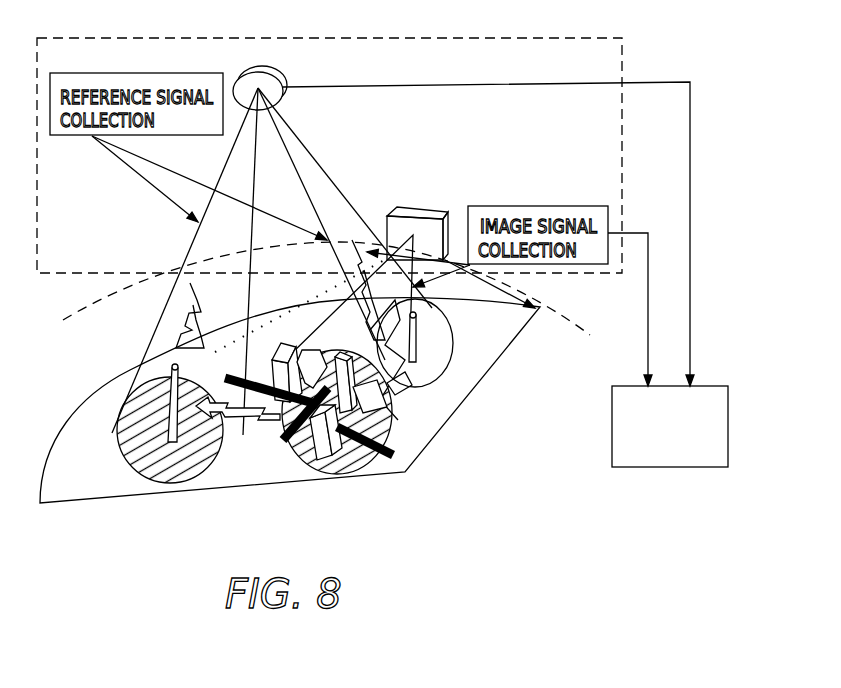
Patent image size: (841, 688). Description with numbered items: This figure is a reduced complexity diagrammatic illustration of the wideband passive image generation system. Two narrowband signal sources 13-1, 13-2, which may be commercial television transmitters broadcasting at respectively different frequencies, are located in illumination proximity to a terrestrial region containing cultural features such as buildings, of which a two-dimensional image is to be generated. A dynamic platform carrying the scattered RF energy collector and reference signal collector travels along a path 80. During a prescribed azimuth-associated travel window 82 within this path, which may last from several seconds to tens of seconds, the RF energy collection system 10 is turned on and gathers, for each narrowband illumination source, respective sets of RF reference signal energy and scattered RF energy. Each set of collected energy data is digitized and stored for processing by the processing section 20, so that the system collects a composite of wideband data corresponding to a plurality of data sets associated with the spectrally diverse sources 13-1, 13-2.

The RF energy collection system 10 is at (316, 37).
The processing section 20 is at (729, 425).
The path 80 is at (180, 262).
The travel window 82 is at (461, 257).
The narrowband signal source 13-1 is at (133, 471).
The narrowband signal source 13-2 is at (415, 340).